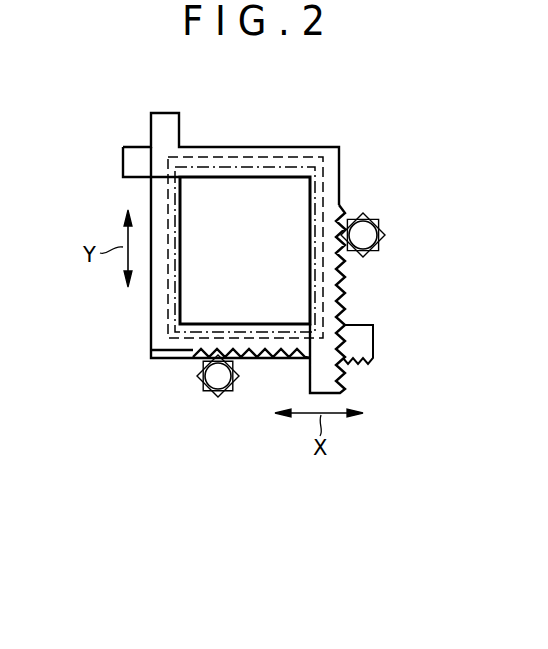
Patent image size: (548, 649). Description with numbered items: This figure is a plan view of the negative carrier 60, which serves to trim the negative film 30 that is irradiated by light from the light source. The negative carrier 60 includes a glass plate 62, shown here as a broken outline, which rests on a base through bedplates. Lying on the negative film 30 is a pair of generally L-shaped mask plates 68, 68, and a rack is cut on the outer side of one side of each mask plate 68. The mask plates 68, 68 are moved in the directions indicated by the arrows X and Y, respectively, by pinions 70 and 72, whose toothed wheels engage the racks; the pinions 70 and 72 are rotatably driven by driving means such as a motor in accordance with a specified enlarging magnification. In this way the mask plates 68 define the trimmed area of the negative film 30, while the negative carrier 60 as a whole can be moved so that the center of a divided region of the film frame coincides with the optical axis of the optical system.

The negative film 30 is at (207, 163).
The negative carrier 60 is at (337, 141).
The glass plate 62 is at (261, 158).
The mask plate 68 is at (333, 172).
The pinion 70 is at (385, 237).
The pinion 72 is at (218, 396).